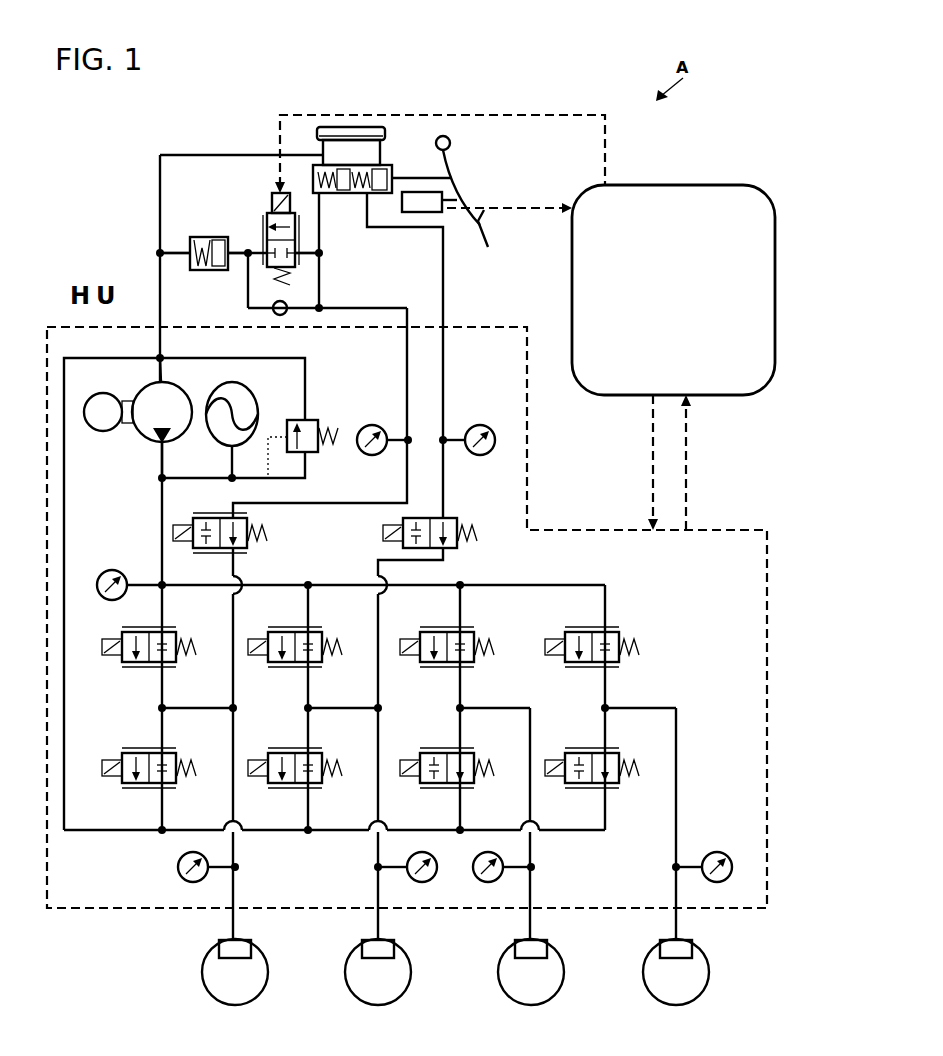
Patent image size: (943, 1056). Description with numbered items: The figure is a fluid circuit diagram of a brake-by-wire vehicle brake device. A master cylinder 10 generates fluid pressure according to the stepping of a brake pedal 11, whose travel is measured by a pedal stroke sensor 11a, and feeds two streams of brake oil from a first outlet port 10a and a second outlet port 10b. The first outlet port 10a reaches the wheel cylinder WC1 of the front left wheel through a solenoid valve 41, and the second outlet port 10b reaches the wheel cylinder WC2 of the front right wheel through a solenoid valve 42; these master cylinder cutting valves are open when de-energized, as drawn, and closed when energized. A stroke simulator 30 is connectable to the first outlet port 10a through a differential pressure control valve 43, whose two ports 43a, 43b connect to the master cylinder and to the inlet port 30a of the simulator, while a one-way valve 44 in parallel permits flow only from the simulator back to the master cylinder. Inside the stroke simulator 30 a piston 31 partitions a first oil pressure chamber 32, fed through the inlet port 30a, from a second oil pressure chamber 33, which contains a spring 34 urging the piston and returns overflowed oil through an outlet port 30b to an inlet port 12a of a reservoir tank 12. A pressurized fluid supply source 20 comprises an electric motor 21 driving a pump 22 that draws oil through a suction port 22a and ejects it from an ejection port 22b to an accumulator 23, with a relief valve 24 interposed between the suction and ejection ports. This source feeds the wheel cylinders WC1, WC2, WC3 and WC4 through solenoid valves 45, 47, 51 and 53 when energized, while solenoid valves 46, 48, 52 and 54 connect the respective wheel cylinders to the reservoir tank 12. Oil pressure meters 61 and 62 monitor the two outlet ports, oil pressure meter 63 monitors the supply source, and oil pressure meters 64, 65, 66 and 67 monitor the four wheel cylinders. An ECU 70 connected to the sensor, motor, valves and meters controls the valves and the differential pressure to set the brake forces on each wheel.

The master cylinder 10 is at (382, 295).
The first outlet port 10a is at (321, 194).
The second outlet port 10b is at (368, 194).
The brake pedal 11 is at (455, 184).
The pedal stroke sensor 11a is at (418, 213).
The reservoir tank 12 is at (337, 107).
The inlet port 12a is at (323, 158).
The pressurized fluid supply source 20 is at (146, 426).
The electric motor 21 is at (85, 412).
The pump 22 is at (166, 418).
The suction port 22a is at (160, 379).
The ejection port 22b is at (168, 446).
The accumulator 23 is at (256, 398).
The relief valve 24 is at (318, 422).
The stroke simulator 30 is at (182, 257).
The inlet port 30a is at (230, 268).
The outlet port 30b is at (190, 246).
The piston 31 is at (218, 262).
The first oil pressure chamber 32 is at (226, 238).
The second oil pressure chamber 33 is at (194, 240).
The spring 34 is at (200, 268).
The solenoid valve 41 is at (248, 548).
The solenoid valve 42 is at (452, 518).
The differential pressure control valve 43 is at (299, 187).
The port 43a is at (296, 256).
The port 43b is at (267, 248).
The one-way valve 44 is at (287, 296).
The solenoid valve 45 is at (176, 632).
The solenoid valve 46 is at (140, 753).
The solenoid valve 47 is at (322, 632).
The solenoid valve 48 is at (285, 753).
The solenoid valve 51 is at (472, 632).
The solenoid valve 52 is at (437, 753).
The solenoid valve 53 is at (617, 632).
The solenoid valve 54 is at (582, 753).
The oil pressure meter 61 is at (375, 425).
The oil pressure meter 62 is at (481, 425).
The oil pressure meter 63 is at (113, 570).
The oil pressure meter 64 is at (178, 870).
The oil pressure meter 65 is at (432, 856).
The oil pressure meter 66 is at (479, 879).
The oil pressure meter 67 is at (726, 856).
The ECU 70 is at (717, 185).
The wheel cylinder WC1 is at (222, 942).
The wheel cylinder WC2 is at (366, 942).
The wheel cylinder WC3 is at (519, 942).
The wheel cylinder WC4 is at (664, 942).